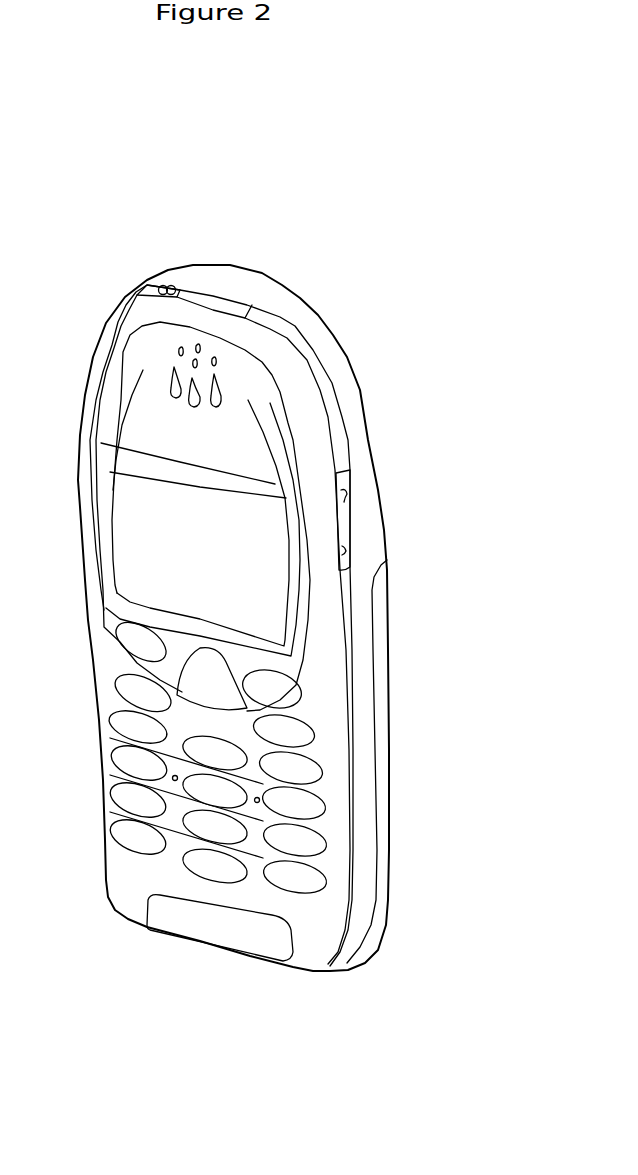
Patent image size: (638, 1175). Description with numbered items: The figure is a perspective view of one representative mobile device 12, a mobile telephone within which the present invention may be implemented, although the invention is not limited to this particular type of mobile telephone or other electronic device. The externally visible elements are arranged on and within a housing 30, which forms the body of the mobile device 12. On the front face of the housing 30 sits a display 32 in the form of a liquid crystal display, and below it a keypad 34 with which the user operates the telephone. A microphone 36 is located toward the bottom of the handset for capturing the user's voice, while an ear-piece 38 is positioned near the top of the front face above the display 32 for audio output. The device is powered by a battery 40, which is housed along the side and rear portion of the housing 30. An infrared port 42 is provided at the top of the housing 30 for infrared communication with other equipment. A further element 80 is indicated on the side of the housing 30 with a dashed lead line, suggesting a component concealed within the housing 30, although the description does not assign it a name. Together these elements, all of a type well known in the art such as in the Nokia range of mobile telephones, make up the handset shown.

The mobile device 12 is at (333, 265).
The housing 30 is at (353, 407).
The display 32 is at (270, 592).
The keypad 34 is at (245, 817).
The microphone 36 is at (165, 917).
The ear-piece 38 is at (175, 370).
The battery 40 is at (383, 865).
The infrared port 42 is at (213, 295).
The internal antenna 80 is at (389, 744).